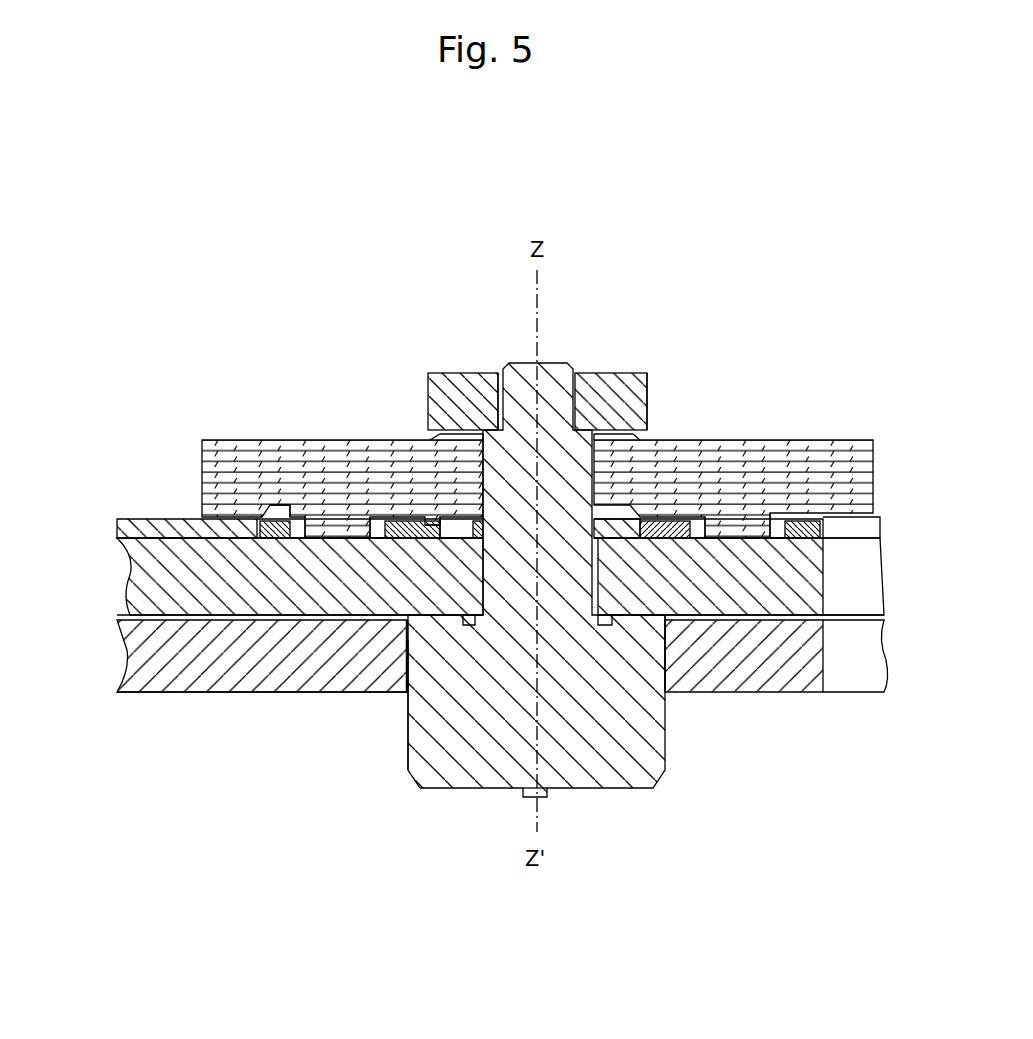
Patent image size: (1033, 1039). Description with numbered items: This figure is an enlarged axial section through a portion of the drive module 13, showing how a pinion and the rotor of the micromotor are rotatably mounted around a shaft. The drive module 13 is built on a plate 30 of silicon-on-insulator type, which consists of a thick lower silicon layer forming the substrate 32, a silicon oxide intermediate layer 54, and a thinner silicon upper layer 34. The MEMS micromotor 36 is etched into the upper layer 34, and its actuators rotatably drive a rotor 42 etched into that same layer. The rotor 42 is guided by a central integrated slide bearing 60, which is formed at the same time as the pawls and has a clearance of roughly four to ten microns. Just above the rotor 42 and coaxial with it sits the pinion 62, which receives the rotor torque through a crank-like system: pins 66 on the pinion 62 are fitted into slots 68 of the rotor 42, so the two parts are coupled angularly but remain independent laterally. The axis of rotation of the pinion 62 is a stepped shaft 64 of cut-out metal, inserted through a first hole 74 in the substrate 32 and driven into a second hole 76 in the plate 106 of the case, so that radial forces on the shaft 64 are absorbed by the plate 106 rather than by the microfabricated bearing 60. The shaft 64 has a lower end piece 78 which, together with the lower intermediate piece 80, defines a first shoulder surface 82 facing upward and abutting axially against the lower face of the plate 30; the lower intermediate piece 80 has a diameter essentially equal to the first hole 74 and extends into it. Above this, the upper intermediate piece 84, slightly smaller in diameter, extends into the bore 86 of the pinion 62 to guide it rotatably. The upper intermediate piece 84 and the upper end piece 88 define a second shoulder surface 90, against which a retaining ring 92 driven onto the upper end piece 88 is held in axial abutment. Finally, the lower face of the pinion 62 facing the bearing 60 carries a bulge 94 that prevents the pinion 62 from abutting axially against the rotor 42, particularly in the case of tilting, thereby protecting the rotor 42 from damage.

The drive module 13 is at (188, 360).
The plate 30 is at (118, 578).
The substrate 32 is at (125, 617).
The upper layer 34 is at (128, 522).
The micromotor 36 is at (325, 378).
The rotor 42 is at (283, 500).
The silicon oxide intermediate layer 54 is at (130, 538).
The slide bearing 60 is at (640, 612).
The pinion 62 is at (413, 425).
The shaft 64 is at (560, 350).
The pins 66 is at (320, 540).
The slots 68 is at (297, 535).
The first hole 74 is at (440, 597).
The second hole 76 is at (668, 660).
The lower end piece 78 is at (600, 728).
The lower intermediate piece 80 is at (470, 618).
The first shoulder surface 82 is at (735, 530).
The upper intermediate piece 84 is at (487, 385).
The bore 86 is at (637, 505).
The upper end piece 88 is at (486, 420).
The second shoulder surface 90 is at (606, 425).
The retaining ring 92 is at (628, 390).
The bulge 94 is at (420, 530).
The plate of the case 106 is at (185, 697).